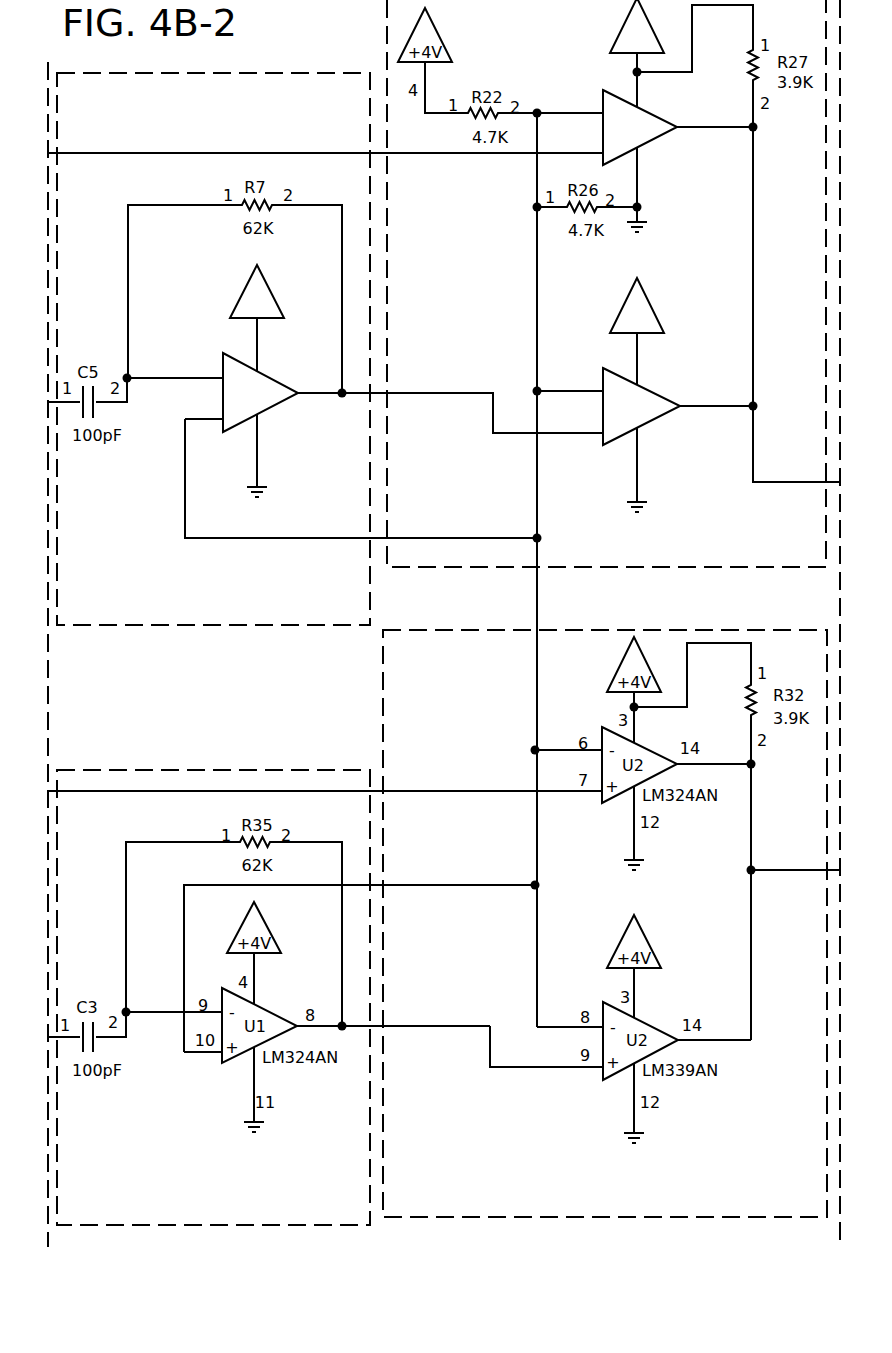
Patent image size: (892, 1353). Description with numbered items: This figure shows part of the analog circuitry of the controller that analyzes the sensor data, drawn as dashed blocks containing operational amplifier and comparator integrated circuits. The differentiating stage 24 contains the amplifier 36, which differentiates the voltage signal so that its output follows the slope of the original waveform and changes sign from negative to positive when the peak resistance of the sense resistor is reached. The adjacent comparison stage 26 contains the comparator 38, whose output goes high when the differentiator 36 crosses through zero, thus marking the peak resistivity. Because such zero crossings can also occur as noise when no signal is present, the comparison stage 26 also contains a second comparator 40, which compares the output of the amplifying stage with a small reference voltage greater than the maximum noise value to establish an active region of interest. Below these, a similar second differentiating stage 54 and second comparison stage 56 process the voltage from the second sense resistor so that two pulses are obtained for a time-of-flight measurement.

The differentiating stage 24 is at (130, 625).
The comparison stage 26 is at (755, 568).
The amplifier 36 is at (263, 372).
The comparator 38 is at (647, 385).
The second comparator 40 is at (645, 103).
The differentiating stage 54 is at (277, 770).
The comparison stage 56 is at (562, 630).